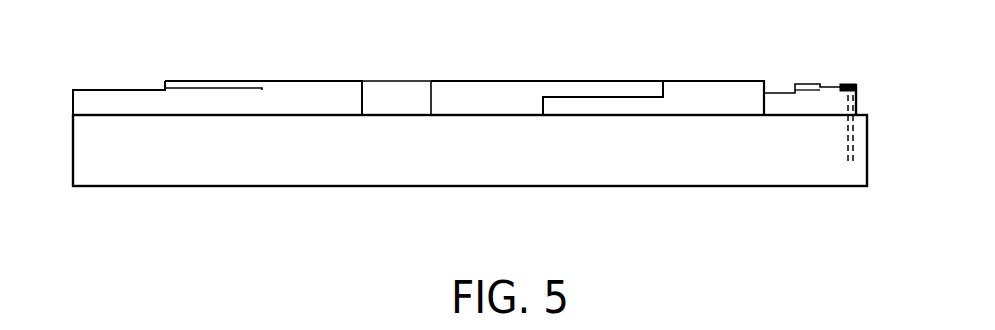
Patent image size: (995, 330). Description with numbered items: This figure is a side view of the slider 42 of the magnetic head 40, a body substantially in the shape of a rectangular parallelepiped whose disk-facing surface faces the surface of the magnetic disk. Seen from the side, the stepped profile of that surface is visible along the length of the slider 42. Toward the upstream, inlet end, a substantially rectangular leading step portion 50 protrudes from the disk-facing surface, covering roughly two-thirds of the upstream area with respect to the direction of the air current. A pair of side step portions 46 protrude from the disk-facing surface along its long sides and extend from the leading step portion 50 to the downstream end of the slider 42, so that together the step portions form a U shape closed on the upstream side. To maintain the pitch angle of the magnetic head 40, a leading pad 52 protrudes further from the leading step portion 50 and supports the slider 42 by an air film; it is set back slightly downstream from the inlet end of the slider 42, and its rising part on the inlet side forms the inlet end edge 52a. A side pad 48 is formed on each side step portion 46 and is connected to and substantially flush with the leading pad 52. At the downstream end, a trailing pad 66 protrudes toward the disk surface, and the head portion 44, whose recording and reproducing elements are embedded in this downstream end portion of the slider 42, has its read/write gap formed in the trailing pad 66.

The magnetic head 40 is at (363, 195).
The slider 42 is at (578, 176).
The head portion 44 is at (852, 146).
The side step portions 46 is at (575, 102).
The side pad 48 is at (715, 87).
The leading step portion 50 is at (116, 96).
The leading pad 52 is at (312, 88).
The inlet end edge 52a is at (166, 86).
The trailing pad 66 is at (833, 83).